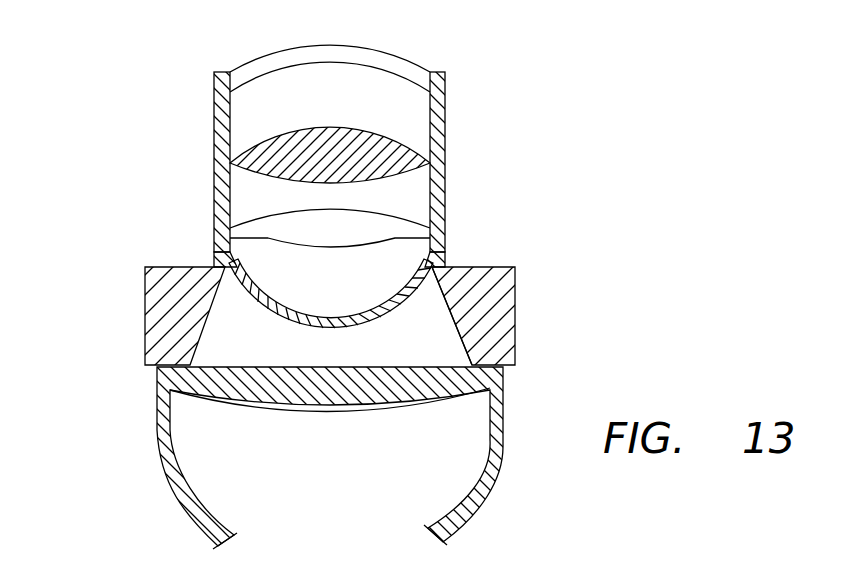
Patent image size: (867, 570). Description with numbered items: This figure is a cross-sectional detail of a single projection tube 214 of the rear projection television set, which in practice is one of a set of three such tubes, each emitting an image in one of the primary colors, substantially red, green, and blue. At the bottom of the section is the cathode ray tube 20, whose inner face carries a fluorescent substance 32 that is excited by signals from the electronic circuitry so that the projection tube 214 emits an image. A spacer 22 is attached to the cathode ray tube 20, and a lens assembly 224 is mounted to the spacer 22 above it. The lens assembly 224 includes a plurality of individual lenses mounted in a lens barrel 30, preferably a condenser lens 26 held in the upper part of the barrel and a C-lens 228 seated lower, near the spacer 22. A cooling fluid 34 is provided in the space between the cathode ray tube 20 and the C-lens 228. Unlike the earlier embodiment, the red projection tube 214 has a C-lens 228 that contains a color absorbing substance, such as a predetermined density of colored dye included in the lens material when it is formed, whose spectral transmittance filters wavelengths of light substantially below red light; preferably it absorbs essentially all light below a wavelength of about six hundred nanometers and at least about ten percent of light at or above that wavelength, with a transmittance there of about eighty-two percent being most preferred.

The projection tube 214 is at (147, 226).
The lens assembly 224 is at (204, 111).
The lens barrel 30 is at (445, 141).
The condenser lens 26 is at (410, 178).
The C-lens 228 is at (464, 266).
The spacer 22 is at (497, 285).
The cooling fluid 34 is at (433, 337).
The cathode ray tube 20 is at (505, 446).
The fluorescent substance 32 is at (335, 410).